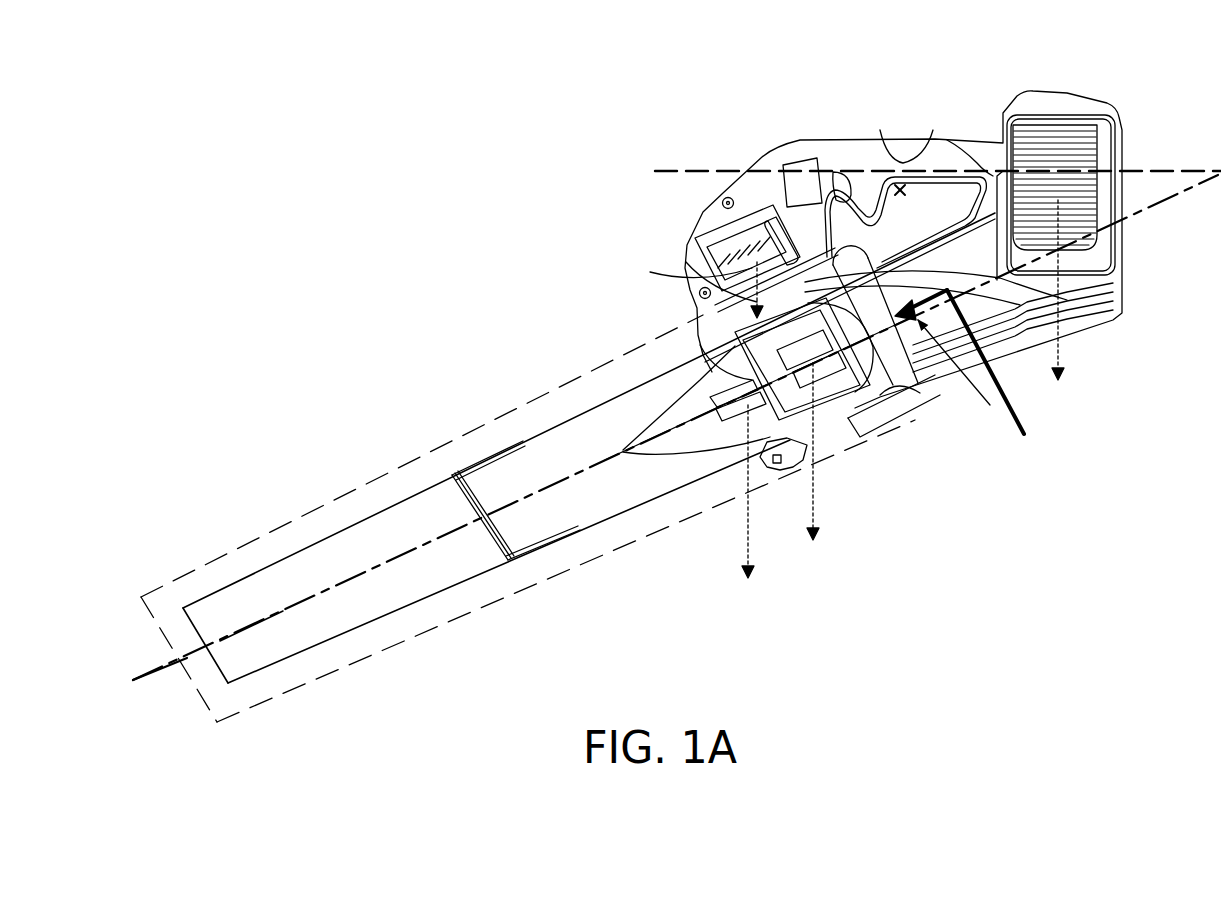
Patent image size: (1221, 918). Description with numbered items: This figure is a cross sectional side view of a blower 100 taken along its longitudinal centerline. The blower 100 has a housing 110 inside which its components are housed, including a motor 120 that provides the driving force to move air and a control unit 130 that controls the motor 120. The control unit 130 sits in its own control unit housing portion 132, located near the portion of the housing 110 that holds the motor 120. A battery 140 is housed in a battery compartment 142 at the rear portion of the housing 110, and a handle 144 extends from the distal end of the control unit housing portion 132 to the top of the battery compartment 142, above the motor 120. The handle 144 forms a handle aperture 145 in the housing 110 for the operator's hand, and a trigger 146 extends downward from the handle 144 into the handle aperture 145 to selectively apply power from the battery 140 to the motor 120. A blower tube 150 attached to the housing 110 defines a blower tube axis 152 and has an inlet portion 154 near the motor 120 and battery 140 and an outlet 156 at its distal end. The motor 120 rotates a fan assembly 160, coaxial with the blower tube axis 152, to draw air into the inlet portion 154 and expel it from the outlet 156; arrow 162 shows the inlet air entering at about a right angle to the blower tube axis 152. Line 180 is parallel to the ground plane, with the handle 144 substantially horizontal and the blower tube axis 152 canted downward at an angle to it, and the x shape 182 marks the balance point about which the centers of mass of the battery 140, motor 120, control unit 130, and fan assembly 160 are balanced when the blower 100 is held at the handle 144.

The blower 100 is at (432, 131).
The housing 110 is at (771, 138).
The motor 120 is at (692, 325).
The control unit 130 is at (687, 262).
The control unit housing portion 132 is at (713, 216).
The battery 140 is at (1082, 165).
The battery compartment 142 is at (1050, 98).
The handle 144 is at (962, 150).
The handle aperture 145 is at (934, 200).
The trigger 146 is at (855, 150).
The blower tube 150 is at (310, 545).
The blower tube axis 152 is at (243, 627).
The inlet portion 154 is at (954, 371).
The outlet 156 is at (210, 658).
The fan assembly 160 is at (869, 440).
The arrow 162 is at (1028, 422).
The line 180 is at (725, 170).
The x shape 182 is at (900, 182).